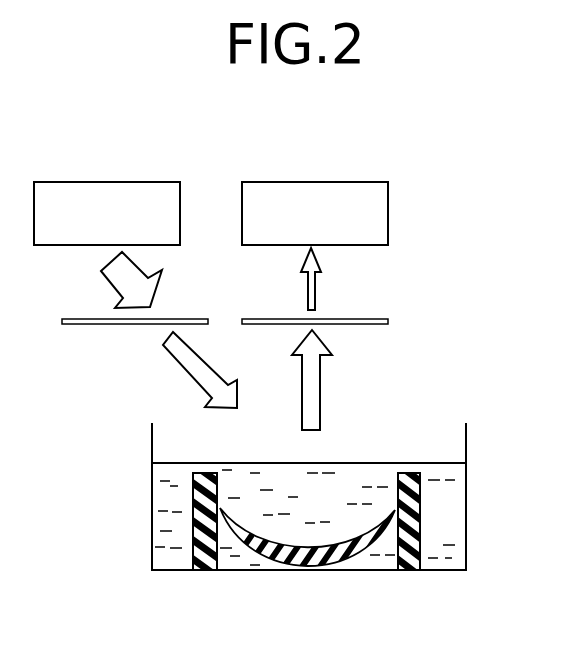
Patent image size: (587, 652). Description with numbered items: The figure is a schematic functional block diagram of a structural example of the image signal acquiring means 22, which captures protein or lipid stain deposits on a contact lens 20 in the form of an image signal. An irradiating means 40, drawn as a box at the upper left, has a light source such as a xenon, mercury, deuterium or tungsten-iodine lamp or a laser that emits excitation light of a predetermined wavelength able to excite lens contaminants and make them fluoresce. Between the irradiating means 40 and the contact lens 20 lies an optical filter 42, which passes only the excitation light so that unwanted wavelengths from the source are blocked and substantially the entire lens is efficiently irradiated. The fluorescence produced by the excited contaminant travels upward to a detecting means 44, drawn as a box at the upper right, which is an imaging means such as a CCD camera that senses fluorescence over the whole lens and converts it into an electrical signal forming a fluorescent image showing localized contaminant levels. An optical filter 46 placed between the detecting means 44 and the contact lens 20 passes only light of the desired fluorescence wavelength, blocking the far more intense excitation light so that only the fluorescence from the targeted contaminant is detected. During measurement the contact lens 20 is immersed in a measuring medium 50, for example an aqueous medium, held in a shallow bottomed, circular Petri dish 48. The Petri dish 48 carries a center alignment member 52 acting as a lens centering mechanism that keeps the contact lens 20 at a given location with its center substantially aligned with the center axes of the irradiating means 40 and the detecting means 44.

The image signal acquiring means 22 is at (452, 111).
The irradiating means 40 is at (143, 193).
The detecting means 44 is at (353, 193).
The optical filter 42 is at (67, 322).
The optical filter 46 is at (373, 319).
The Petri dish 48 is at (473, 438).
The measuring medium 50 is at (452, 523).
The center alignment member 52 is at (202, 548).
The contact lens 20 is at (347, 555).